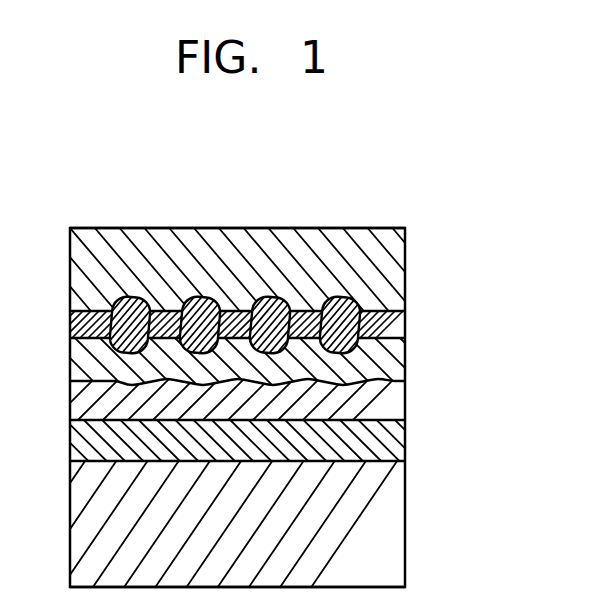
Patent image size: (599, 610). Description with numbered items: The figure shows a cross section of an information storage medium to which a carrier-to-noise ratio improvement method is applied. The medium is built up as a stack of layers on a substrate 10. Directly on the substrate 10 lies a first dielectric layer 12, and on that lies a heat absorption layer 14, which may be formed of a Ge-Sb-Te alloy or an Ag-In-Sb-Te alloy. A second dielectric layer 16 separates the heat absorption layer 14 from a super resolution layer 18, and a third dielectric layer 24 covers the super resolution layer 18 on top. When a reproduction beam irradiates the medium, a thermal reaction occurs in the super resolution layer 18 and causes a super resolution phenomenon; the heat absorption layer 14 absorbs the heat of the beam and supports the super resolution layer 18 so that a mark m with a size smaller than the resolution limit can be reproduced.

The substrate 10 is at (387, 522).
The first dielectric layer 12 is at (387, 443).
The heat absorption layer 14 is at (395, 405).
The second dielectric layer 16 is at (387, 368).
The super resolution layer 18 is at (257, 261).
The third dielectric layer 24 is at (385, 258).
The mark m is at (135, 297).